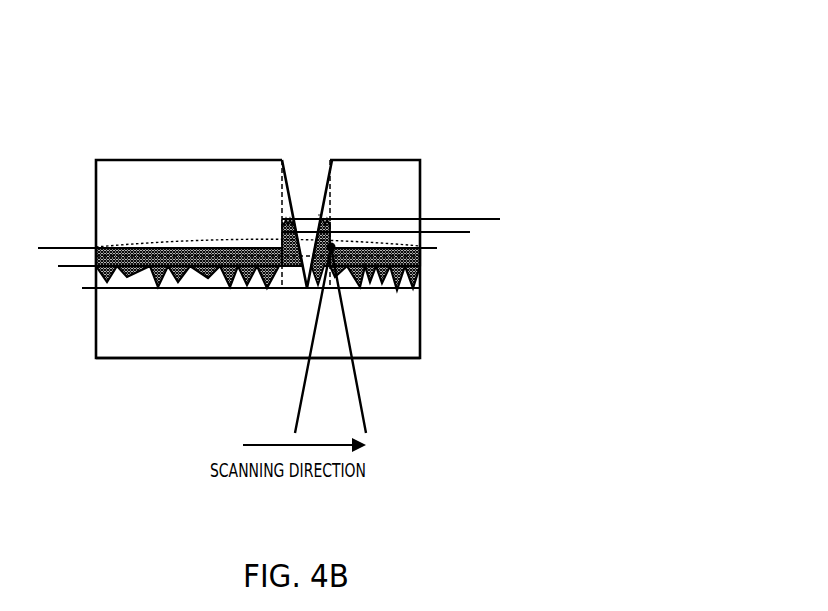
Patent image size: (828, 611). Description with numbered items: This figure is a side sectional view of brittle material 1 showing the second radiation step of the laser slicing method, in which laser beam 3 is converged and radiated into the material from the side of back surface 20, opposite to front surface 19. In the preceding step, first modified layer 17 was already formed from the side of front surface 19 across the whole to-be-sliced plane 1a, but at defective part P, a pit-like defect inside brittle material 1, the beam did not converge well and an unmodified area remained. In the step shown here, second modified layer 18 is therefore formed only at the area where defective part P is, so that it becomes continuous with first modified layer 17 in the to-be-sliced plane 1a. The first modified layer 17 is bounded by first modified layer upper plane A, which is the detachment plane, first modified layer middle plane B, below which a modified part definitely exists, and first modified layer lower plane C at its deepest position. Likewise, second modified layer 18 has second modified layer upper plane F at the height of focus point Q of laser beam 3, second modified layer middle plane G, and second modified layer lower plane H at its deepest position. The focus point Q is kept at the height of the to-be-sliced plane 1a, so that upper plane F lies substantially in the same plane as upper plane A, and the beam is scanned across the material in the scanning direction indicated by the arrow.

The brittle material 1 is at (333, 124).
The to-be-sliced plane 1a is at (420, 252).
The laser beam 3 is at (301, 399).
The first modified layer 17 is at (148, 254).
The second modified layer 18 is at (277, 243).
The front surface 19 is at (394, 160).
The back surface 20 is at (378, 359).
The first modified layer upper plane A is at (149, 248).
The first modified layer middle plane B is at (227, 267).
The first modified layer lower plane C is at (238, 288).
The second modified layer upper plane F is at (394, 250).
The second modified layer middle plane G is at (387, 234).
The second modified layer lower plane H is at (402, 219).
The defective part P is at (319, 215).
The focus point Q is at (333, 245).